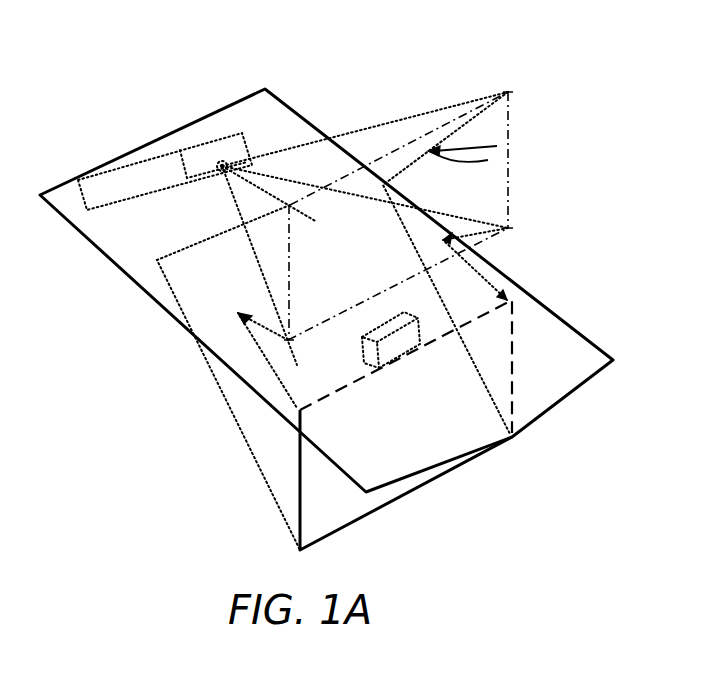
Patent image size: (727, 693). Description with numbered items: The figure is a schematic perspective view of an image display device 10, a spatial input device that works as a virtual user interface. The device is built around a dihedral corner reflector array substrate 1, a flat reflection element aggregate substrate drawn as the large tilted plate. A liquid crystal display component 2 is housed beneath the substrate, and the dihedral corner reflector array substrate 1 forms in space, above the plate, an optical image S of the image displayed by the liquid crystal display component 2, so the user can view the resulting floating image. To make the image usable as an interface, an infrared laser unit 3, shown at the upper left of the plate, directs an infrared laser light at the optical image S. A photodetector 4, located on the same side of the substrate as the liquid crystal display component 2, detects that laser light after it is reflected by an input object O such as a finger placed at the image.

The image display device 10 is at (356, 80).
The dihedral corner reflector array substrate 1 is at (568, 323).
The liquid crystal display component 2 is at (453, 468).
The infrared laser unit 3 is at (156, 154).
The photodetector 4 is at (370, 352).